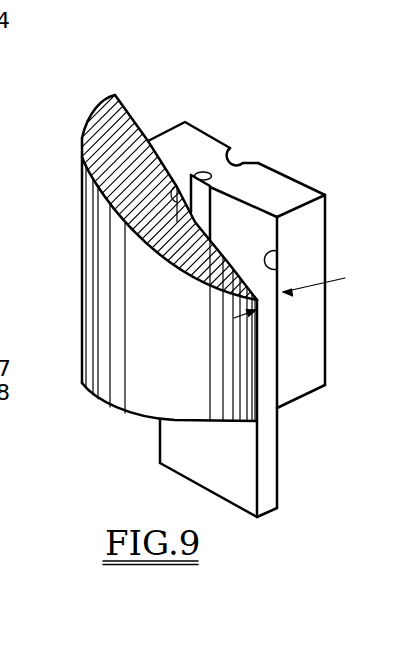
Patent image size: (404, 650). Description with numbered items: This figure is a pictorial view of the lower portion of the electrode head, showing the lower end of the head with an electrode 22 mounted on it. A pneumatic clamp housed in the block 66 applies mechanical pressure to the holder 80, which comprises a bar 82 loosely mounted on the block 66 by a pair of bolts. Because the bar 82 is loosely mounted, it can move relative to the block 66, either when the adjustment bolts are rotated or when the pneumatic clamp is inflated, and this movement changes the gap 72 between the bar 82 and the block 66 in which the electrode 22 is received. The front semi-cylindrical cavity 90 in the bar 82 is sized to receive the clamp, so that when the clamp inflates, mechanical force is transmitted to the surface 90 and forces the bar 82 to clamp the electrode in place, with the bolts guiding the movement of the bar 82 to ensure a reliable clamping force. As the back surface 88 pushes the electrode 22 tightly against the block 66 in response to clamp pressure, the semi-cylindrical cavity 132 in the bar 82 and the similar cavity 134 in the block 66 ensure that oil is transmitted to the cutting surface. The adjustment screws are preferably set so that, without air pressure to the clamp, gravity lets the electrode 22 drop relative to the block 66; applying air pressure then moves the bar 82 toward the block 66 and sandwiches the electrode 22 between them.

The electrode 22 is at (266, 484).
The block 66 is at (157, 398).
The gap 72 is at (256, 300).
The holder 80 is at (219, 80).
The bar 82 is at (282, 200).
The back surface 88 is at (277, 262).
The front semi-cylindrical cavity 90 is at (281, 198).
The semi-cylindrical cavity 132 is at (240, 168).
The cavity 134 is at (200, 172).